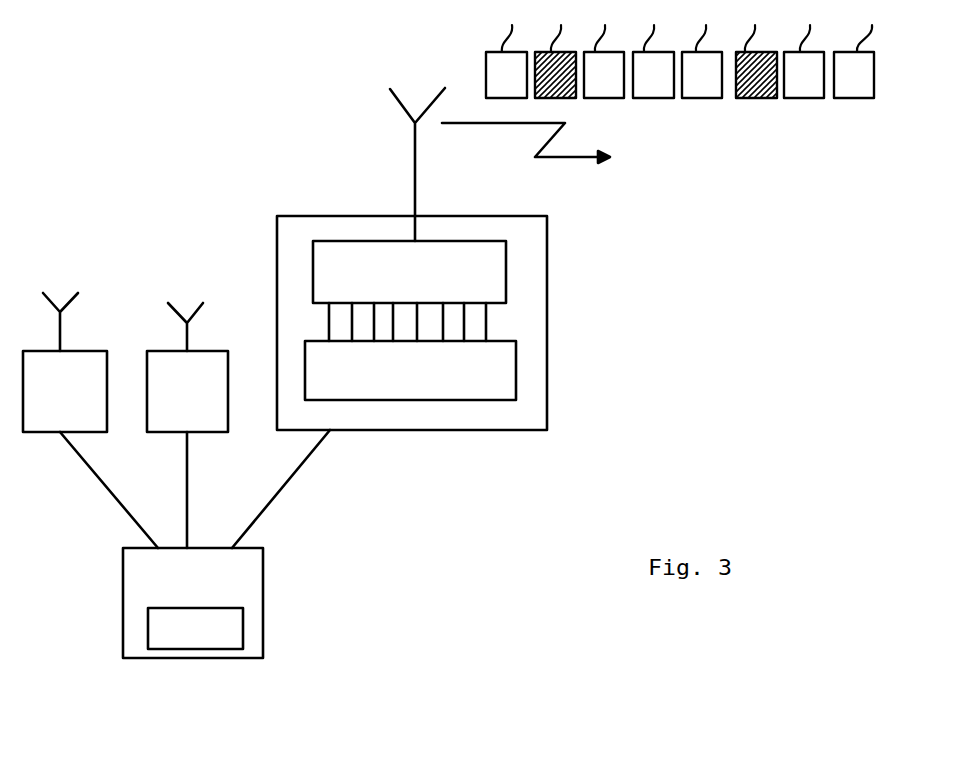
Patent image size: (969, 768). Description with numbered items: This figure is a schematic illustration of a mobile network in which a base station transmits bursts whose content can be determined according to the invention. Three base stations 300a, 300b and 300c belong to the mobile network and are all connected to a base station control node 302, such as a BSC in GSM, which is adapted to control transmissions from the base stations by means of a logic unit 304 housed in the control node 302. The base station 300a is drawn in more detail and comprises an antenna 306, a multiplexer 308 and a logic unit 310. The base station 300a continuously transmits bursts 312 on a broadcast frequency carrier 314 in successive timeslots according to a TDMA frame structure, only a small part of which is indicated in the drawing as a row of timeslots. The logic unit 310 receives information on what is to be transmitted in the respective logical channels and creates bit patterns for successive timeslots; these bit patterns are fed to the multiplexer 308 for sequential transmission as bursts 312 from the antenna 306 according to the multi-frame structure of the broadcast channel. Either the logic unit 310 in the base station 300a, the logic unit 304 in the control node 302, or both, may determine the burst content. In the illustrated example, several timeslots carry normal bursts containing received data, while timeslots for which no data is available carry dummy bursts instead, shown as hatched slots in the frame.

The base station 300a is at (547, 302).
The base station 300b is at (209, 432).
The base station 300c is at (97, 432).
The base station control node 302 is at (263, 597).
The logic unit 304 is at (243, 630).
The antenna 306 is at (400, 110).
The multiplexer 308 is at (506, 274).
The logic unit 310 is at (516, 367).
The bursts 312 is at (829, 157).
The broadcast frequency carrier 314 is at (500, 125).